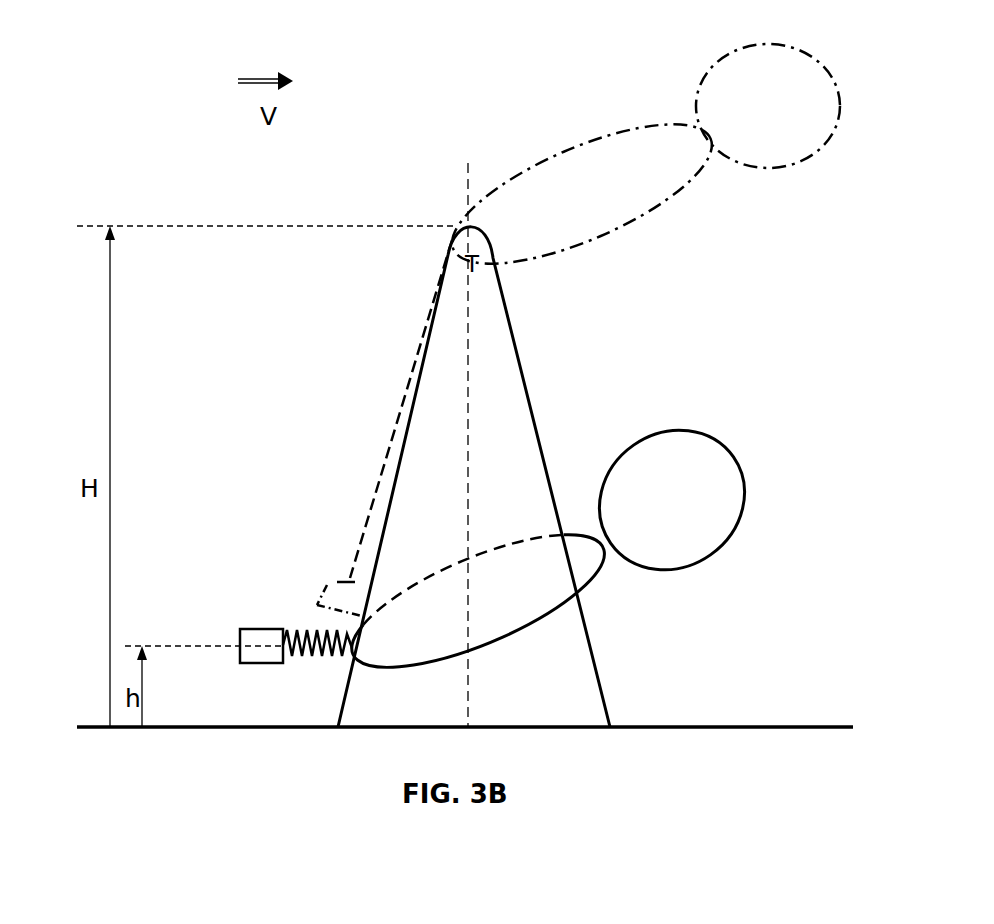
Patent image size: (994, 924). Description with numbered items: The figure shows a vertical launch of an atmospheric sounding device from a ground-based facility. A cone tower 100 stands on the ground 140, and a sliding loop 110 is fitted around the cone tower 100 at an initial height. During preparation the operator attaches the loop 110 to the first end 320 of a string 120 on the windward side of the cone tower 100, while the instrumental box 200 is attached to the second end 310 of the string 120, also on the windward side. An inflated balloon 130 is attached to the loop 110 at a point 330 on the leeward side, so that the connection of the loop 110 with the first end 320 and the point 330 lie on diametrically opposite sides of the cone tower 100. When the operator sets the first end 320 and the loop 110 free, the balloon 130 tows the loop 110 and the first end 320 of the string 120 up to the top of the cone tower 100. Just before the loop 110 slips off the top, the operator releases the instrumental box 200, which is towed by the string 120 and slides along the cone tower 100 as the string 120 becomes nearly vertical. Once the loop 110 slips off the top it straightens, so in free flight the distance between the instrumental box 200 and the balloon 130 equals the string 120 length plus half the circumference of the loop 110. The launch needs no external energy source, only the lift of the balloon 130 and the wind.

The cone tower 100 is at (500, 430).
The loop 110 is at (638, 230).
The string 120 is at (407, 370).
The inflated balloon 130 is at (720, 100).
The ground 140 is at (725, 725).
The instrumental box 200 is at (330, 580).
The second end of the string 310 is at (350, 570).
The first end of the string 320 is at (447, 247).
The point 330 is at (703, 140).